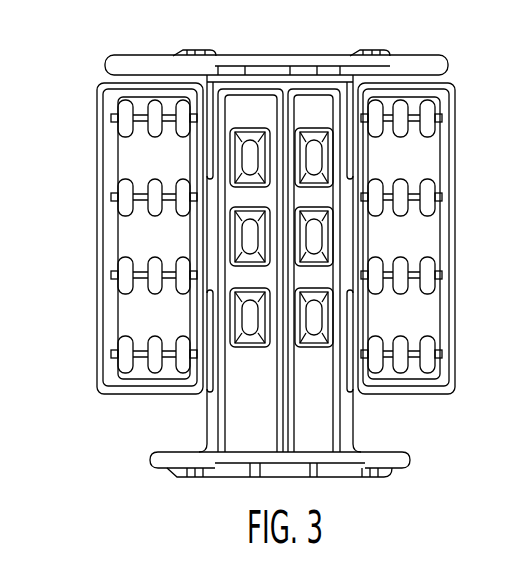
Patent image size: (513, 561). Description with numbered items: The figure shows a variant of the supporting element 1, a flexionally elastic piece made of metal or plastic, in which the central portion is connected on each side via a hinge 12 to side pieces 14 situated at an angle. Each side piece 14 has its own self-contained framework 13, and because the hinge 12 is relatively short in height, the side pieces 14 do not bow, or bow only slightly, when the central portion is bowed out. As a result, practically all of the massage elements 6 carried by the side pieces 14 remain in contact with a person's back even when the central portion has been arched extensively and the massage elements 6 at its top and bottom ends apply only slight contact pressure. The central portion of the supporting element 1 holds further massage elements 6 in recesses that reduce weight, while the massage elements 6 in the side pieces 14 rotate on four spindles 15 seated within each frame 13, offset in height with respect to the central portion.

The supporting element 1 is at (414, 46).
The massage elements 6 is at (311, 142).
The hinge 12 is at (212, 238).
The framework 13 is at (107, 157).
The side pieces 14 is at (94, 88).
The spindles 15 is at (143, 291).